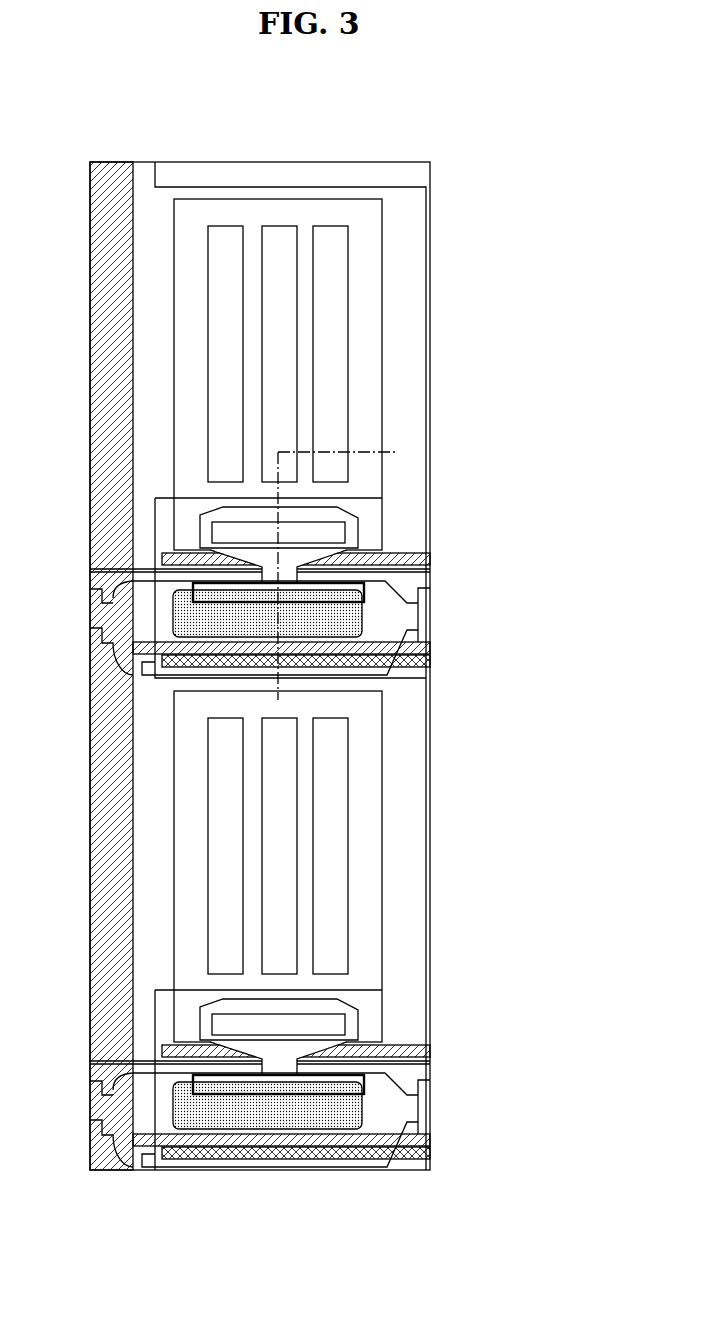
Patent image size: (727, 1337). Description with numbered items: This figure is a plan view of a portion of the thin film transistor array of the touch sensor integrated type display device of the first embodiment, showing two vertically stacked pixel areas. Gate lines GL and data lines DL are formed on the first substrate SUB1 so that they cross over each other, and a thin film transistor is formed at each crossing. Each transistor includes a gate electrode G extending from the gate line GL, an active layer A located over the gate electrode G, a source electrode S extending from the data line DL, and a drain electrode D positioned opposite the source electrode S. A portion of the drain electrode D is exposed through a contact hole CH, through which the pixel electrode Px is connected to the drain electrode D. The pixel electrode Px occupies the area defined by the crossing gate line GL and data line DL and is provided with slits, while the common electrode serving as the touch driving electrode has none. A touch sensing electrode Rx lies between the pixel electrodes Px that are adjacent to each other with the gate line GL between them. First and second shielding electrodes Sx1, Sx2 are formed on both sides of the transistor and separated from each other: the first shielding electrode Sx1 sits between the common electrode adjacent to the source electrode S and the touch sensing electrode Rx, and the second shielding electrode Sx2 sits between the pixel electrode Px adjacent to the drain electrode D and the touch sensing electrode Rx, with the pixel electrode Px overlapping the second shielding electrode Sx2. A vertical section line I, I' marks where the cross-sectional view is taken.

The data line DL is at (110, 170).
The pixel electrode Px is at (382, 268).
The contact hole CH is at (345, 525).
The drain electrode D is at (358, 533).
The second shielding electrode Sx2 is at (428, 557).
The touch sensing electrode Rx is at (420, 582).
The gate electrode G is at (388, 597).
The gate line GL is at (427, 617).
The active layer A is at (347, 622).
The first shielding electrode Sx1 is at (377, 657).
The source electrode S is at (423, 672).
The first substrate SUB1 is at (407, 1167).
The section line I is at (282, 704).
The section line I' is at (342, 571).